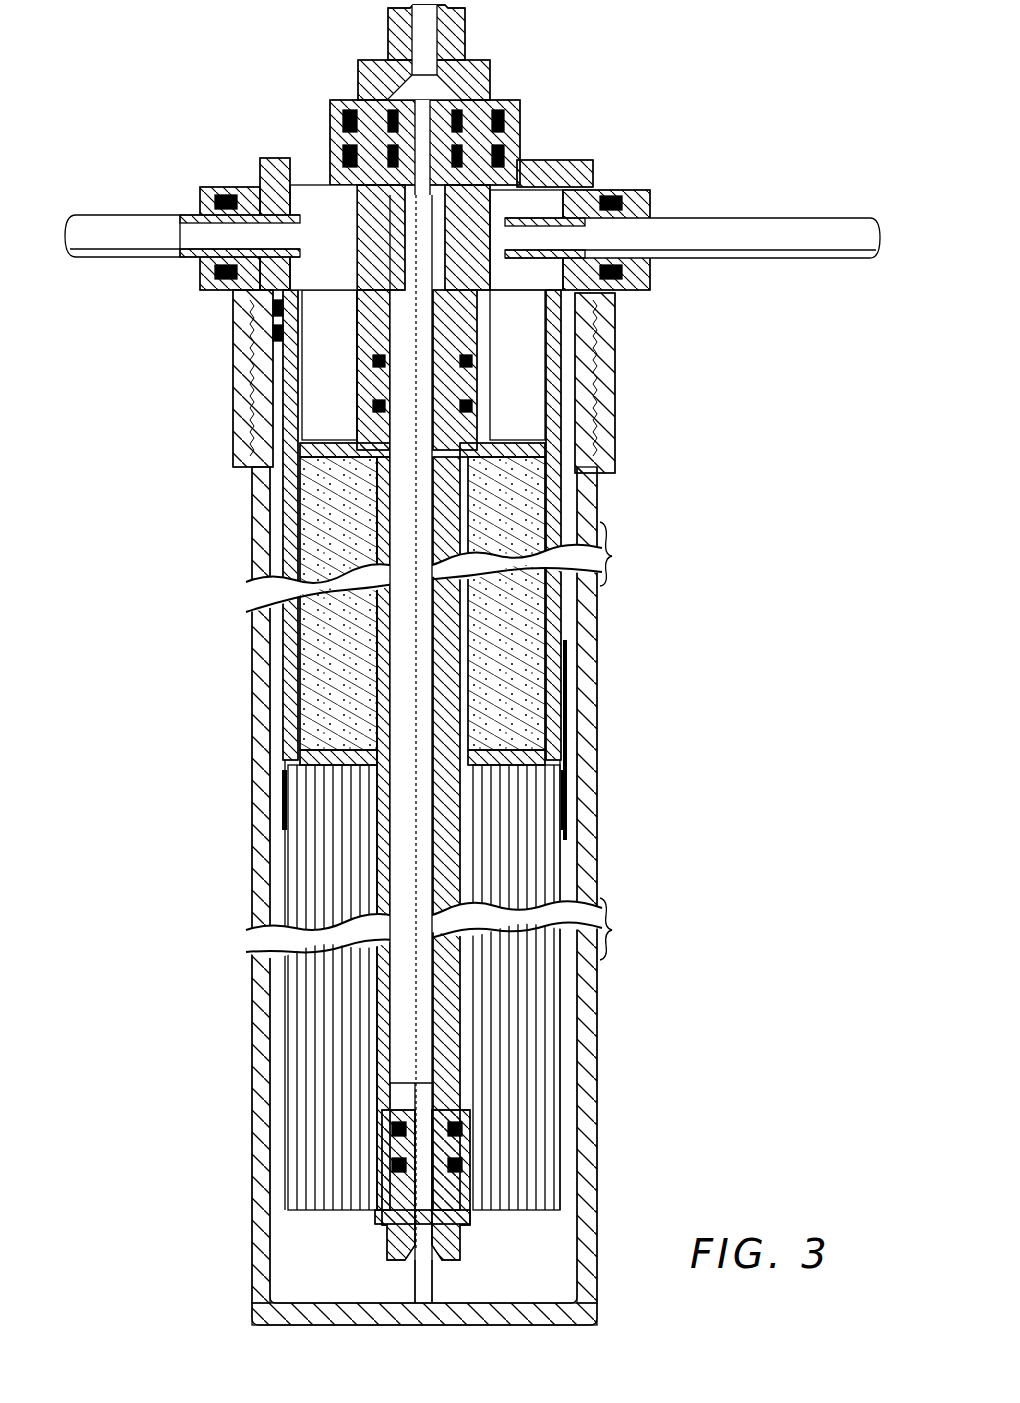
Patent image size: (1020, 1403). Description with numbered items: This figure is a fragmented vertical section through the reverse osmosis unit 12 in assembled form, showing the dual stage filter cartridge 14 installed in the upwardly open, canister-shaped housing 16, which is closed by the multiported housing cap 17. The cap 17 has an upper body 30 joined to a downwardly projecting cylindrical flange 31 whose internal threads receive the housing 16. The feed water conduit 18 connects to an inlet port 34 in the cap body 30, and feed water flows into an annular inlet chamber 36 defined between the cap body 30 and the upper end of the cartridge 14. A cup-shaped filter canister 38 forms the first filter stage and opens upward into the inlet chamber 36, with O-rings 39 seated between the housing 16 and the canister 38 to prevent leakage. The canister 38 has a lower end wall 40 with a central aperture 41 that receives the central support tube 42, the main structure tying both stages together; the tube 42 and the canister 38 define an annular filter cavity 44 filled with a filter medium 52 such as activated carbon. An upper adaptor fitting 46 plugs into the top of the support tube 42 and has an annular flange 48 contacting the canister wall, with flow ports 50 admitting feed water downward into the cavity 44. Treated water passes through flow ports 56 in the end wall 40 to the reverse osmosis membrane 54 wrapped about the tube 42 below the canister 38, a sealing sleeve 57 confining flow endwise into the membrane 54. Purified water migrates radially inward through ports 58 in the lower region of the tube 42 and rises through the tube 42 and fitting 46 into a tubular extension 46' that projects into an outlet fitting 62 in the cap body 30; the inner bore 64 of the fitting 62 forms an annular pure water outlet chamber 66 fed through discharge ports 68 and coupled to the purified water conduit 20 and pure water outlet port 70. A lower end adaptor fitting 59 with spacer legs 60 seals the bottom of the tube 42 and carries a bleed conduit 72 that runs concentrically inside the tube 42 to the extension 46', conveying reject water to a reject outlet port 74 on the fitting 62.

The reverse osmosis unit 12 is at (200, 762).
The filter cartridge 14 is at (560, 650).
The housing 16 is at (597, 870).
The housing cap 17 is at (608, 138).
The feed water conduit 18 is at (120, 215).
The purified water conduit 20 is at (760, 226).
The upper body 30 is at (300, 160).
The cylindrical flange 31 is at (615, 408).
The inlet port 34 is at (275, 215).
The annular inlet chamber 36 is at (236, 290).
The filter canister 38 is at (256, 497).
The O-rings 39 is at (273, 335).
The lower end wall 40 is at (545, 762).
The central aperture 41 is at (530, 738).
The central support tube 42 is at (570, 612).
The filter cavity 44 is at (325, 558).
The upper adaptor fitting 46 is at (483, 370).
The tubular upper extension 46' is at (500, 365).
The annular flange 48 is at (600, 482).
The flow ports 50 is at (327, 442).
The filter medium 52 is at (352, 672).
The reverse osmosis membrane 54 is at (545, 1052).
The flow ports 56 is at (335, 782).
The sealing sleeve 57 is at (284, 706).
The ports 58 is at (380, 1022).
The lower end adaptor fitting 59 is at (393, 1218).
The spacer legs 60 is at (440, 1290).
The outlet fitting 62 is at (360, 232).
The inner bore 64 is at (356, 318).
The pure water outlet chamber 66 is at (500, 182).
The discharge ports 68 is at (375, 262).
The pure water outlet port 70 is at (590, 192).
The bleed conduit 72 is at (430, 1063).
The reject outlet port 74 is at (455, 45).